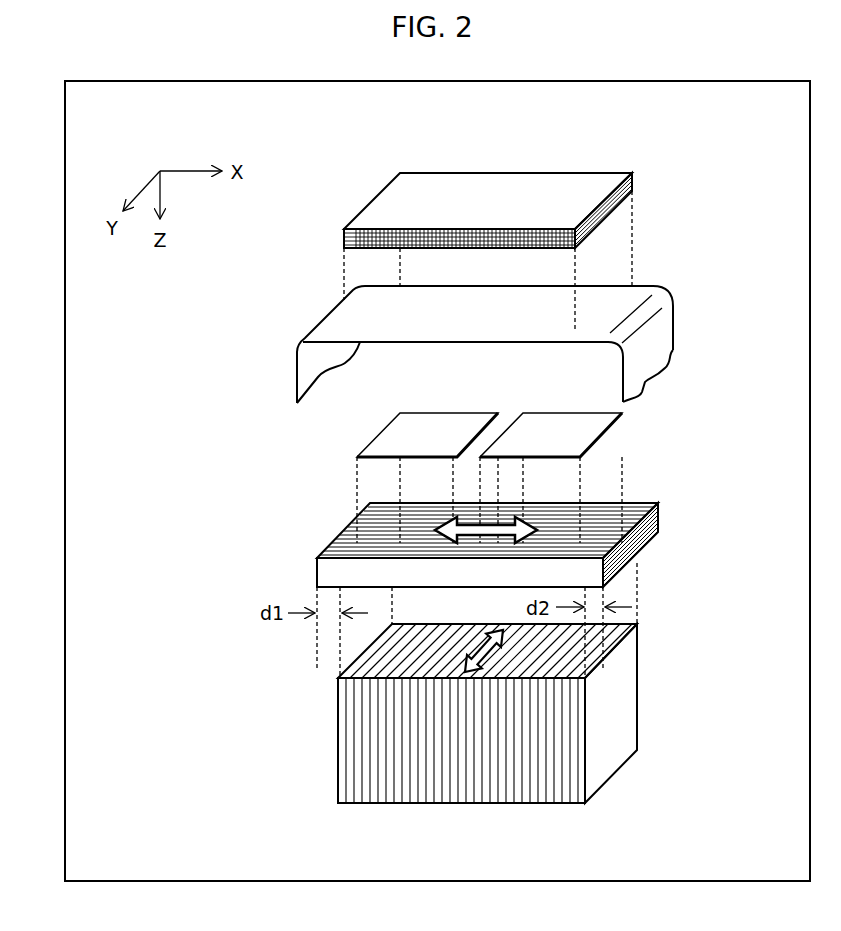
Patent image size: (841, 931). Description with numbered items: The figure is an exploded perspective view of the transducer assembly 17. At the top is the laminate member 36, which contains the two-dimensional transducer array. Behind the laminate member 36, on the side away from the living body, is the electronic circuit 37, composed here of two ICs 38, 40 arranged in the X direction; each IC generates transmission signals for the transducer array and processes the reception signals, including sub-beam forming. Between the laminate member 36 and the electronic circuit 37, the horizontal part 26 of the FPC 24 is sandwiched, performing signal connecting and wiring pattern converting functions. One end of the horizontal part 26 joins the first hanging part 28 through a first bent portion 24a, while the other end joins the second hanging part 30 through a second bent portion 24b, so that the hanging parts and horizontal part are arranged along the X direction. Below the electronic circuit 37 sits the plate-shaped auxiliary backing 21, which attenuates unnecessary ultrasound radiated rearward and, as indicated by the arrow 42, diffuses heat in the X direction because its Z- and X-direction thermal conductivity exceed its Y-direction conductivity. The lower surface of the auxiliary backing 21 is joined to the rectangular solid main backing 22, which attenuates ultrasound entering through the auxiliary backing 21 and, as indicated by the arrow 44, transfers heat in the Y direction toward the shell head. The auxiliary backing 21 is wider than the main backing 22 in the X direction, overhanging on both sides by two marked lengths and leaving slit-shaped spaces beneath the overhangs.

The transducer assembly 17 is at (346, 154).
The laminate member 36 is at (617, 222).
The FPC 24 is at (494, 340).
The first bent portion 24a is at (668, 290).
The second bent portion 24b is at (333, 314).
The horizontal part 26 is at (460, 343).
The first hanging part 28 is at (642, 360).
The second hanging part 30 is at (295, 370).
The electronic circuit 37 is at (450, 419).
The IC 40 is at (437, 413).
The IC 38 is at (555, 413).
The auxiliary backing 21 is at (538, 532).
The heat diffusion in X direction 42 is at (497, 522).
The main backing 22 is at (542, 731).
The heat transfer in Y direction 44 is at (492, 655).